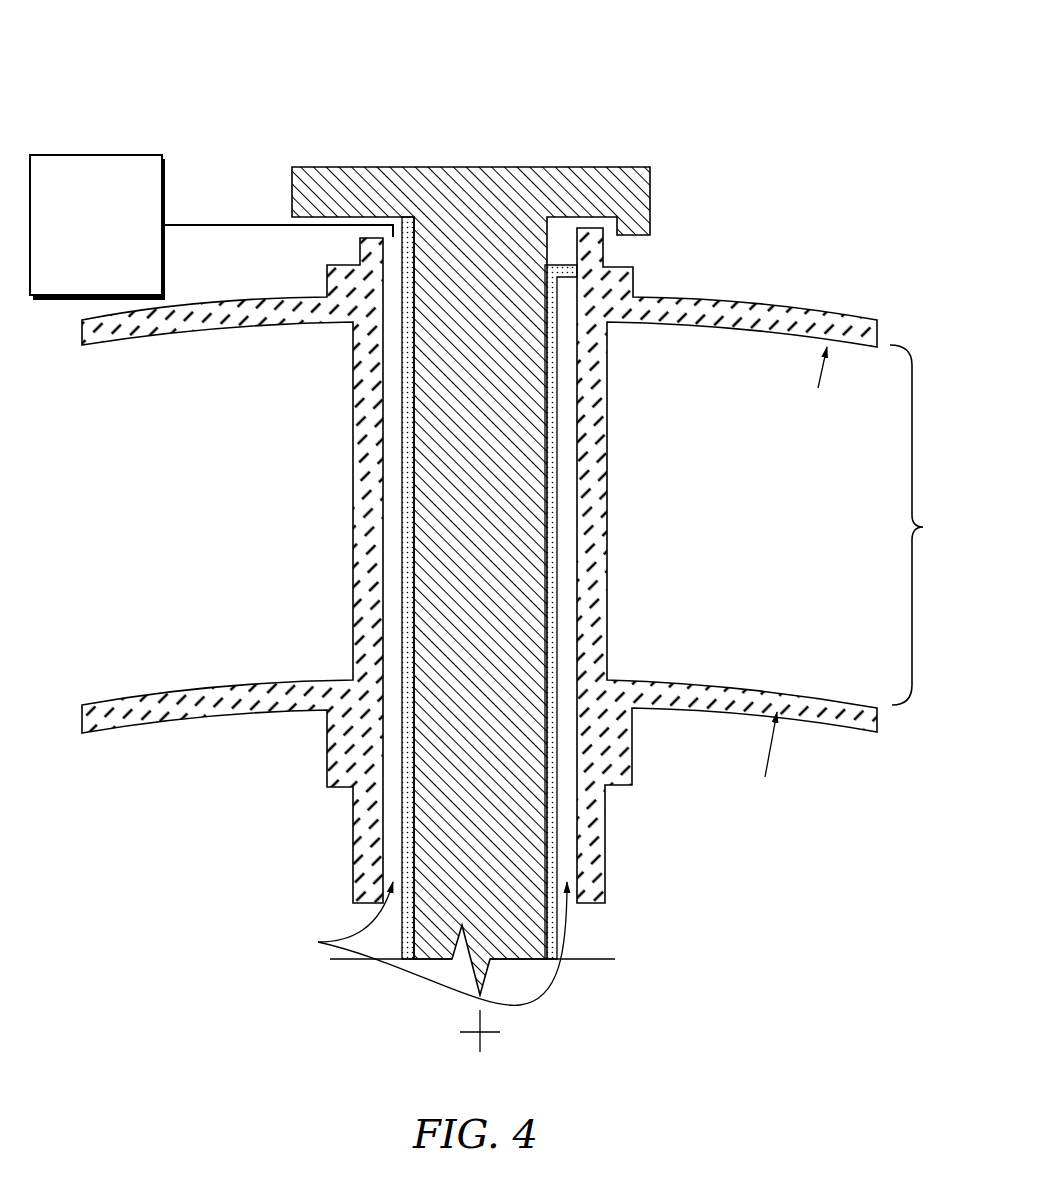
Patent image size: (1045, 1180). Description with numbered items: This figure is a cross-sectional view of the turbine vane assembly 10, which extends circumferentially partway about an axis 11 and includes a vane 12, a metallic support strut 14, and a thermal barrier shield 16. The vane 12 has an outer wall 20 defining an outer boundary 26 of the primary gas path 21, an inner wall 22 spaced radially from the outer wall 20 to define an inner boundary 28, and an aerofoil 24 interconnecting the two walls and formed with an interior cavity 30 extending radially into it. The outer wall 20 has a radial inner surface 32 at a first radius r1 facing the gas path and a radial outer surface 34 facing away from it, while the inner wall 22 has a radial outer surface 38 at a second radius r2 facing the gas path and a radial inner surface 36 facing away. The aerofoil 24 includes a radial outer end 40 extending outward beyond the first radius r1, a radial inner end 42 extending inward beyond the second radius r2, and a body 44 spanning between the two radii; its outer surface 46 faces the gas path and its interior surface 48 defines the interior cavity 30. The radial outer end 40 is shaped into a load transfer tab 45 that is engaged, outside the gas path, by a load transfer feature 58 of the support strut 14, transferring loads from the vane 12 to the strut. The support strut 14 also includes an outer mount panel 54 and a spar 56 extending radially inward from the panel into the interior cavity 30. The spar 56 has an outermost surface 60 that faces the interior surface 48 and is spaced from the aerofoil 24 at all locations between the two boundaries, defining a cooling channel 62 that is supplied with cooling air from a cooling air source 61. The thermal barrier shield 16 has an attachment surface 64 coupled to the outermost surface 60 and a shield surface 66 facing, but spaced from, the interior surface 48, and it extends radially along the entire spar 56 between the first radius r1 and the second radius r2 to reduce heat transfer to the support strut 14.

The turbine vane assembly 10 is at (113, 64).
The axis 11 is at (482, 1036).
The vane 12 is at (222, 570).
The support strut 14 is at (496, 543).
The thermal barrier shield 16 is at (607, 612).
The outer wall 20 is at (229, 570).
The primary gas path 21 is at (923, 527).
The inner wall 22 is at (110, 698).
The aerofoil 24 is at (229, 570).
The outer boundary 26 is at (751, 565).
The inner boundary 28 is at (883, 710).
The interior cavity 30 is at (446, 543).
The radial inner surface 32 is at (751, 565).
The radial outer surface 34 is at (751, 565).
The radial inner surface 36 is at (751, 565).
The radial outer surface 38 is at (751, 565).
The radial outer end 40 is at (229, 570).
The radial inner end 42 is at (229, 570).
The body 44 is at (229, 570).
The load transfer tab 45 is at (751, 565).
The outer surface 46 is at (229, 570).
The interior surface 48 is at (384, 400).
The outer mount panel 54 is at (446, 557).
The spar 56 is at (607, 612).
The load transfer feature 58 is at (560, 224).
The outermost surface 60 is at (607, 612).
The cooling air source 61 is at (118, 153).
The cooling channel 62 is at (426, 943).
The attachment surface 64 is at (545, 510).
The shield surface 66 is at (607, 612).
The first radius r1 is at (850, 377).
The second radius r2 is at (773, 750).